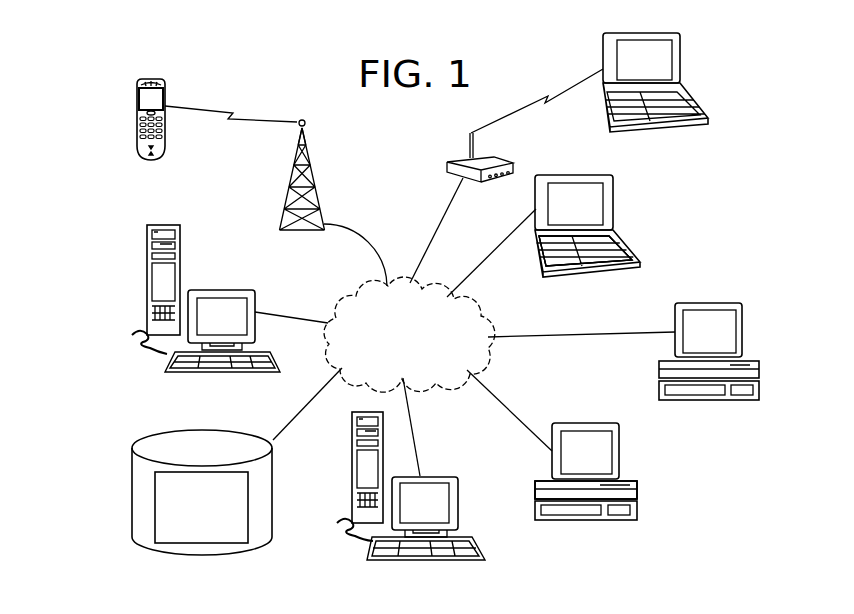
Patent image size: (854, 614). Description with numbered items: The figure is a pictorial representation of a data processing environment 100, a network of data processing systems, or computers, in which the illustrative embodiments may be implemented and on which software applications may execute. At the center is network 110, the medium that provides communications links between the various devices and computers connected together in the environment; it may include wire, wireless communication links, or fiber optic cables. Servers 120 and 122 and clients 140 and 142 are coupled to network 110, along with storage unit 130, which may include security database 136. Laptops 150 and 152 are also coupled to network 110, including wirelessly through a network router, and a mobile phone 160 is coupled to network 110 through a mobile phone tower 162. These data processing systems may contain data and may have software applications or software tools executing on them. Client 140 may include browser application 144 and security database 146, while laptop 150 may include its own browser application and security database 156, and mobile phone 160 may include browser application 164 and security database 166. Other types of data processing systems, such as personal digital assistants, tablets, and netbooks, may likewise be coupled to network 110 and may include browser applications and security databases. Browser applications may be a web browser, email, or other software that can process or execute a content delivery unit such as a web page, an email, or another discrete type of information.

The data processing environment 100 is at (370, 178).
The network 110 is at (427, 356).
The server 120 is at (237, 416).
The server 122 is at (445, 603).
The storage unit 130 is at (260, 458).
The security database 136 is at (223, 538).
The client 140 is at (610, 566).
The client 142 is at (725, 444).
The browser application 144 is at (760, 540).
The security database 146 is at (637, 490).
The laptop 150 is at (607, 321).
The laptop 152 is at (688, 176).
The security database 156 is at (617, 234).
The mobile phone 160 is at (128, 193).
The mobile phone tower 162 is at (325, 275).
The browser application 164 is at (138, 93).
The security database 166 is at (238, 100).